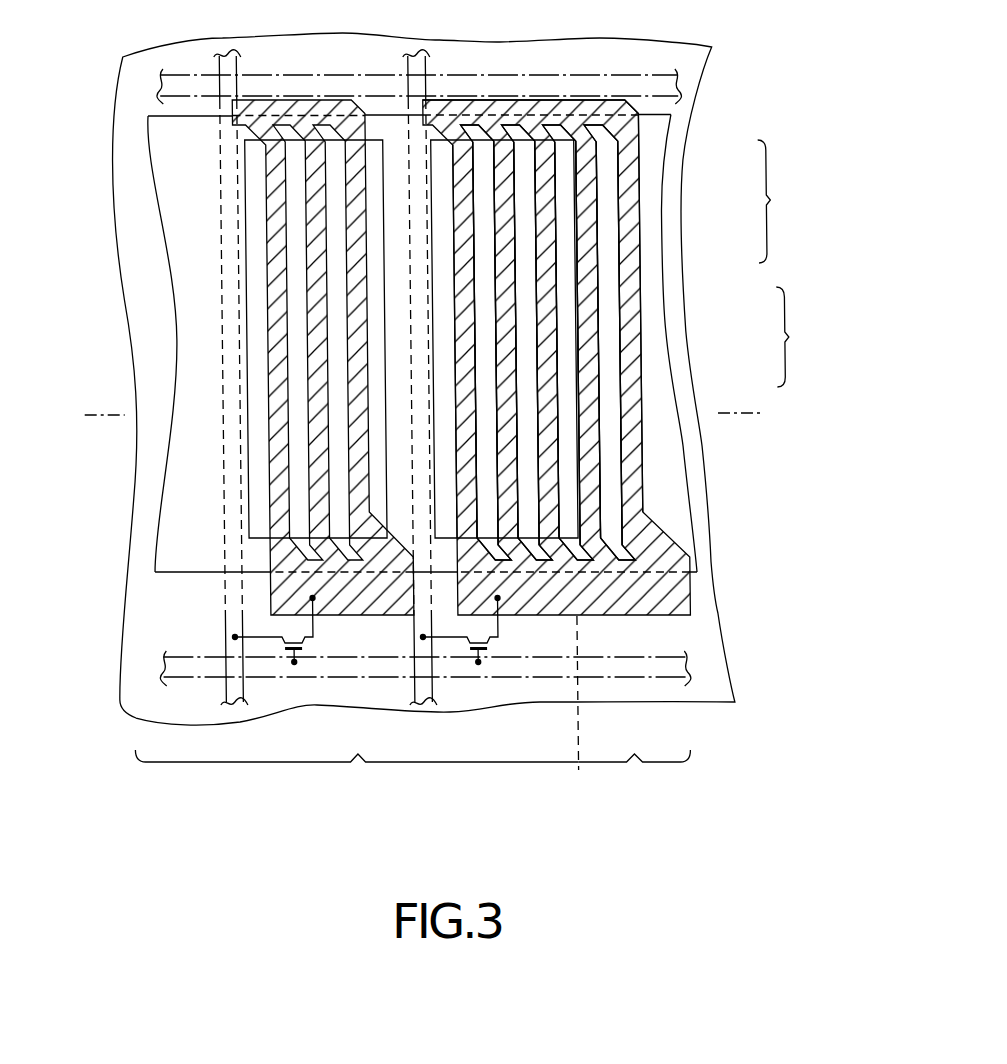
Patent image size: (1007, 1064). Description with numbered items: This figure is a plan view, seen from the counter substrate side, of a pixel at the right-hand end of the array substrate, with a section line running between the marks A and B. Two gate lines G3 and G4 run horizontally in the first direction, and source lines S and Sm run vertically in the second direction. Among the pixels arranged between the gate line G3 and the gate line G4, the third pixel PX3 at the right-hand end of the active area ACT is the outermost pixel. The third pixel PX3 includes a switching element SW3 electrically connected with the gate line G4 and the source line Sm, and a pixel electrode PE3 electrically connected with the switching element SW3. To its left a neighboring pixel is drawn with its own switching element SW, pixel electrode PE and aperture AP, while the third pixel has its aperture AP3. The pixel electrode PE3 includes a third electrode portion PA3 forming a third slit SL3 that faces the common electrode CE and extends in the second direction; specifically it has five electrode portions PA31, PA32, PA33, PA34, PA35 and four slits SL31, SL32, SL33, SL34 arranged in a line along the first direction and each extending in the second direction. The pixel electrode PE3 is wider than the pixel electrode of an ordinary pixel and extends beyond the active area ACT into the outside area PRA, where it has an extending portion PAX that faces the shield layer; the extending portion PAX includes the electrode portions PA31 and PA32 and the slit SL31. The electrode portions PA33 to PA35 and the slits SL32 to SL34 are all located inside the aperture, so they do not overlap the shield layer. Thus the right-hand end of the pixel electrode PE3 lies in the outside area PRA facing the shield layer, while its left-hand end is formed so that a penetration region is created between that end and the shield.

The source line S is at (230, 56).
The source line Sm is at (423, 56).
The third pixel PX3 is at (553, 380).
The extending portion PAX is at (624, 107).
The gate line G3 is at (660, 82).
The gate line G4 is at (668, 680).
The electrode portion PA31 is at (632, 152).
The electrode portion PA32 is at (590, 188).
The electrode portion PA33 is at (549, 213).
The electrode portion PA34 is at (504, 227).
The electrode portion PA35 is at (466, 243).
The third electrode portion PA3 is at (788, 201).
The slit SL31 is at (610, 300).
The slit SL32 is at (563, 330).
The slit SL33 is at (528, 355).
The slit SL34 is at (485, 387).
The third slit SL3 is at (804, 337).
The section line end A is at (92, 415).
The section line end B is at (750, 413).
The common electrode CE is at (682, 467).
The switching element SW is at (274, 665).
The aperture AP is at (375, 490).
The pixel electrode PE is at (386, 624).
The switching element SW3 is at (459, 664).
The aperture AP3 is at (563, 503).
The pixel electrode PE3 is at (635, 625).
The active area ACT is at (357, 774).
The outside area PRA is at (634, 707).